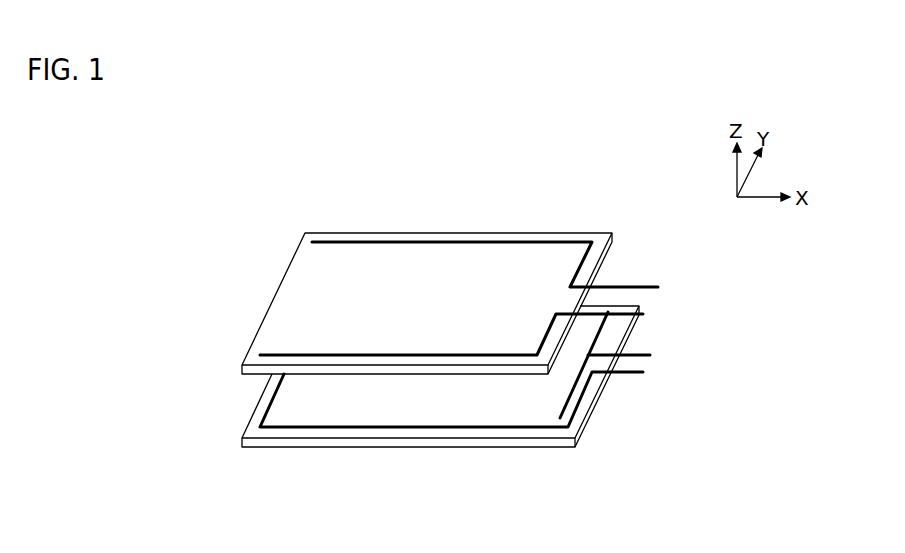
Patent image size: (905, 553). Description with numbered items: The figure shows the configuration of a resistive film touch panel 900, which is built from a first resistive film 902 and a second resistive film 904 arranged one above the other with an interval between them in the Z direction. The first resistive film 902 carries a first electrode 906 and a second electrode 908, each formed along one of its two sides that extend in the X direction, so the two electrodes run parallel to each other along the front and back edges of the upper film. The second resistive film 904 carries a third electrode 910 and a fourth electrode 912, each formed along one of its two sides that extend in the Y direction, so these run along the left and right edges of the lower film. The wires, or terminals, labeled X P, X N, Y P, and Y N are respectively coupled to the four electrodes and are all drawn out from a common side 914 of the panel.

The resistive film touch panel 900 is at (412, 359).
The first resistive film 902 is at (282, 300).
The second resistive film 904 is at (256, 407).
The first electrode 906 is at (453, 241).
The second electrode 908 is at (433, 354).
The third electrode 910 is at (276, 397).
The fourth electrode 912 is at (560, 396).
The common side 914 is at (641, 242).